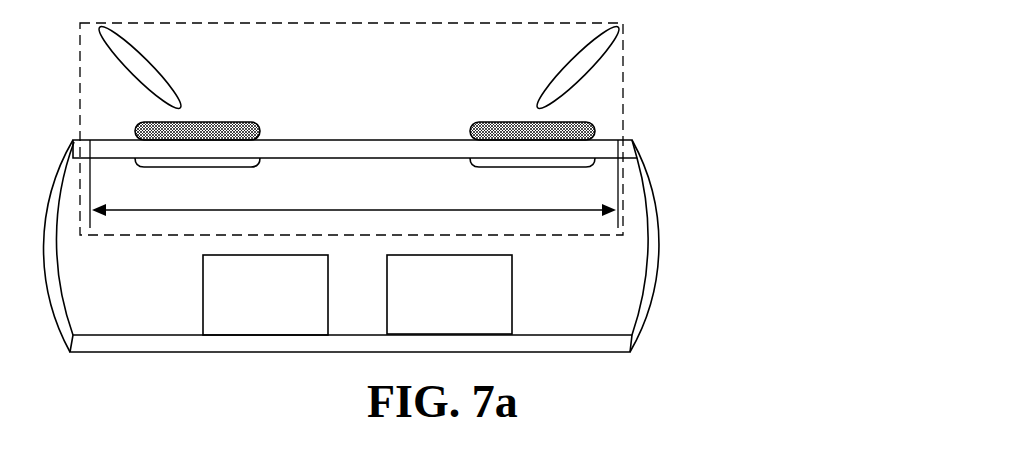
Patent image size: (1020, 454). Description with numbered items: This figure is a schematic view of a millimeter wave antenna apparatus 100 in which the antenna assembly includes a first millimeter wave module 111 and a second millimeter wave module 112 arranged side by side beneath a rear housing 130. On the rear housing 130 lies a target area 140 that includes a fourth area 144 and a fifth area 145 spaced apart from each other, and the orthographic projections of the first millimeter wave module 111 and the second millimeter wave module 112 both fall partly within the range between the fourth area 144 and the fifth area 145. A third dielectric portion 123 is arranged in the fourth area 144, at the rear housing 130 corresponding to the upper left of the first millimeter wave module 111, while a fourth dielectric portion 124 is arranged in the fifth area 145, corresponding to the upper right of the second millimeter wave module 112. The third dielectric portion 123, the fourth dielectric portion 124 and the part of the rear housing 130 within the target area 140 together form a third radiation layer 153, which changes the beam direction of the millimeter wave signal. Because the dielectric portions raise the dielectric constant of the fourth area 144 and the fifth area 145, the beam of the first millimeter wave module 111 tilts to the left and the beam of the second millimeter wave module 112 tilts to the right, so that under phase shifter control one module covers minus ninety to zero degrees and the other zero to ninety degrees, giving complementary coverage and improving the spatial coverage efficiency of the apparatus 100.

The millimeter wave antenna apparatus 100 is at (764, 30).
The third radiation layer 153 is at (623, 80).
The rear housing 130 is at (612, 142).
The third dielectric portion 123 is at (200, 134).
The fourth dielectric portion 124 is at (530, 134).
The fourth area 144 is at (197, 170).
The fifth area 145 is at (535, 170).
The target area 140 is at (354, 184).
The first millimeter wave module 111 is at (203, 273).
The second millimeter wave module 112 is at (512, 273).